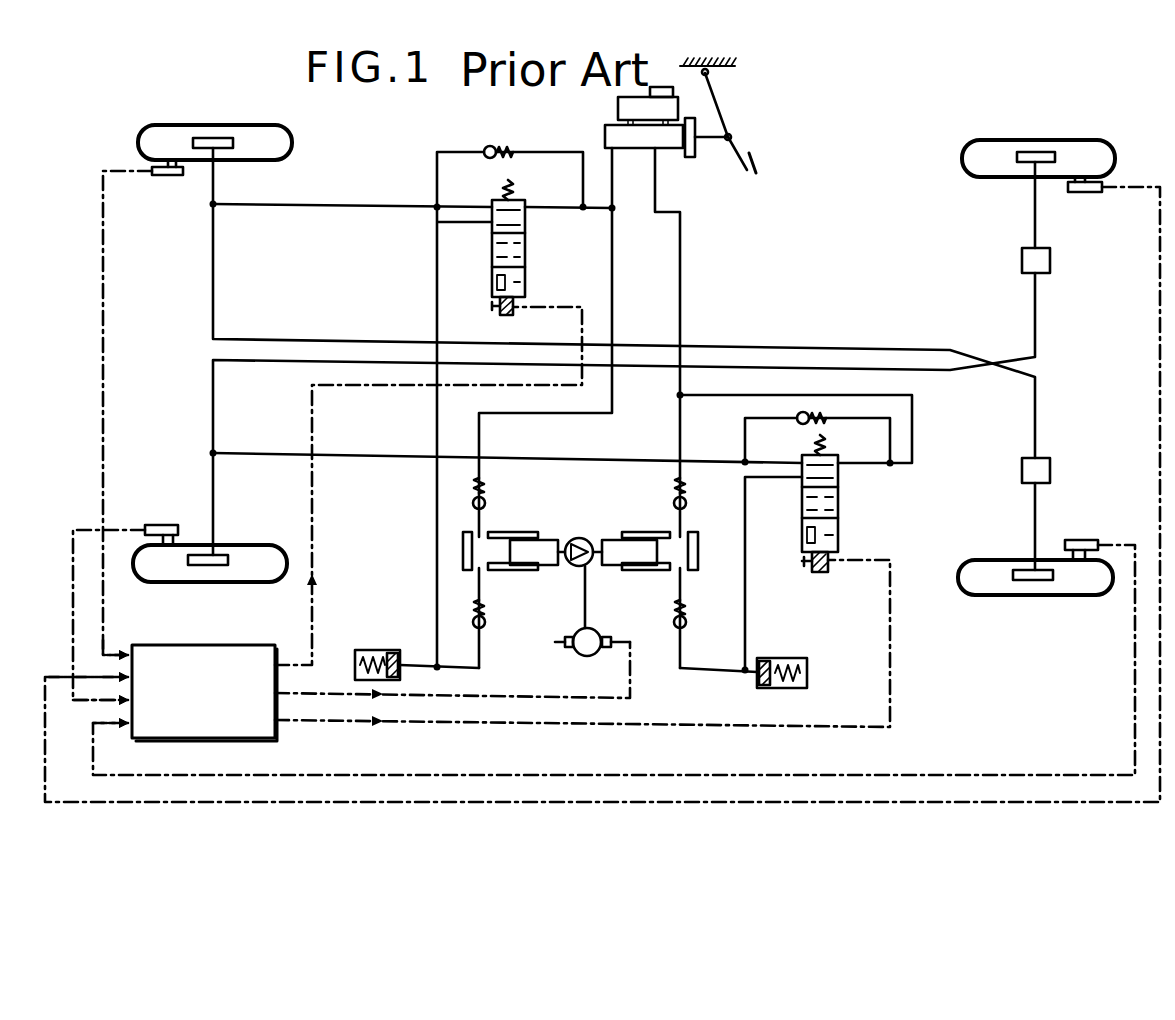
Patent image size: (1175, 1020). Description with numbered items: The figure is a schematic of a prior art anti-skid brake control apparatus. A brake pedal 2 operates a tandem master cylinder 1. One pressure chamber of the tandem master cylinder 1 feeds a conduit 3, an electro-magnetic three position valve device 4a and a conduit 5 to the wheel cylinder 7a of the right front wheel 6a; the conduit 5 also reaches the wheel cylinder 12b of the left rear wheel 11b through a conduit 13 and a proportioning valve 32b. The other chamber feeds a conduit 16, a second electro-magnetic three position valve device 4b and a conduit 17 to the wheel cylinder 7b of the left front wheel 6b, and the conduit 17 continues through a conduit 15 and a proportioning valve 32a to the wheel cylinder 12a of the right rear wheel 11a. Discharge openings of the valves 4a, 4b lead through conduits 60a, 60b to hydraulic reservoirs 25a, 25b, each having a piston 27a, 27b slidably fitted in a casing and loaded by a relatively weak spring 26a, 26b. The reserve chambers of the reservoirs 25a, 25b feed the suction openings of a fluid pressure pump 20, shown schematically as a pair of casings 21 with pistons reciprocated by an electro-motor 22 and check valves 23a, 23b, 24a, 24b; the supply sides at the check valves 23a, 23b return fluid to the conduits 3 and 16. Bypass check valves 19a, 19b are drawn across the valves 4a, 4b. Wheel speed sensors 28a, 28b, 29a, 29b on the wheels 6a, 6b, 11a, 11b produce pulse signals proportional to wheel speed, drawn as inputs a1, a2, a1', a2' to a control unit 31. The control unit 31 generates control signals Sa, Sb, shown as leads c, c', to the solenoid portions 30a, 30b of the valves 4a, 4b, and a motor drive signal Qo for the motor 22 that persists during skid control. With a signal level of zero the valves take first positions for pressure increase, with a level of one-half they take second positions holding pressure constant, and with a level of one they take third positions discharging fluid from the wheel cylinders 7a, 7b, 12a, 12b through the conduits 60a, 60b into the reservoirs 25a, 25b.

The tandem master cylinder 1 is at (598, 115).
The brake pedal 2 is at (741, 147).
The conduit 3 is at (613, 190).
The electro-magnetic three position valve device 4a is at (492, 250).
The electro-magnetic three position valve device 4b is at (802, 510).
The conduit 5 is at (356, 205).
The right front wheel 6a is at (268, 128).
The left front wheel 6b is at (268, 576).
The wheel cylinder 7a is at (213, 138).
The wheel cylinder 7b is at (208, 566).
The right rear wheel 11a is at (984, 148).
The left rear wheel 11b is at (978, 582).
The wheel cylinder 12a is at (1029, 152).
The wheel cylinder 12b is at (1035, 582).
The conduit 13 is at (775, 347).
The conduit 15 is at (905, 374).
The conduit 16 is at (656, 190).
The conduit 17 is at (598, 456).
The check valve 19a is at (490, 145).
The check valve 19b is at (797, 412).
The fluid pressure pump 20 is at (577, 532).
The casing 21 is at (512, 570).
The electro-motor 22 is at (584, 656).
The check valve 23a is at (673, 490).
The check valve 23b is at (486, 490).
The check valve 24a is at (673, 622).
The check valve 24b is at (486, 622).
The hydraulic reservoir 25a is at (385, 650).
The hydraulic reservoir 25b is at (777, 658).
The spring 26a is at (358, 660).
The spring 26b is at (780, 690).
The piston 27a is at (405, 668).
The piston 27b is at (757, 674).
The wheel speed sensor 28a is at (166, 176).
The wheel speed sensor 28b is at (162, 524).
The wheel speed sensor 29a is at (1086, 193).
The wheel speed sensor 29b is at (1085, 540).
The solenoid portion 30a is at (500, 312).
The solenoid portion 30b is at (820, 573).
The control unit 31 is at (205, 645).
The proportioning valve 32a is at (1050, 262).
The proportioning valve 32b is at (1050, 463).
The conduit 60a is at (437, 280).
The conduit 60b is at (746, 575).
The control signal Sa is at (313, 485).
The control signal Sb is at (891, 712).
The motor drive signal Qo is at (470, 697).
The wheel speed signal a1 is at (118, 634).
The wheel speed signal a2 is at (86, 662).
The wheel speed signal a1' is at (93, 709).
The wheel speed signal a2' is at (95, 747).
The control signal c is at (293, 625).
The control signal c' is at (349, 736).